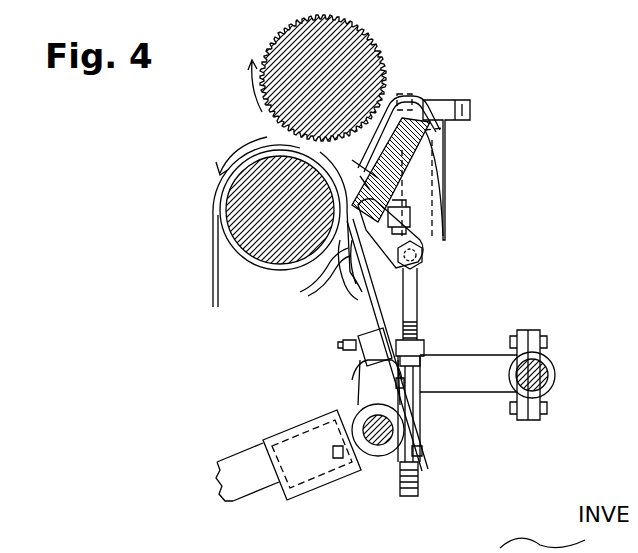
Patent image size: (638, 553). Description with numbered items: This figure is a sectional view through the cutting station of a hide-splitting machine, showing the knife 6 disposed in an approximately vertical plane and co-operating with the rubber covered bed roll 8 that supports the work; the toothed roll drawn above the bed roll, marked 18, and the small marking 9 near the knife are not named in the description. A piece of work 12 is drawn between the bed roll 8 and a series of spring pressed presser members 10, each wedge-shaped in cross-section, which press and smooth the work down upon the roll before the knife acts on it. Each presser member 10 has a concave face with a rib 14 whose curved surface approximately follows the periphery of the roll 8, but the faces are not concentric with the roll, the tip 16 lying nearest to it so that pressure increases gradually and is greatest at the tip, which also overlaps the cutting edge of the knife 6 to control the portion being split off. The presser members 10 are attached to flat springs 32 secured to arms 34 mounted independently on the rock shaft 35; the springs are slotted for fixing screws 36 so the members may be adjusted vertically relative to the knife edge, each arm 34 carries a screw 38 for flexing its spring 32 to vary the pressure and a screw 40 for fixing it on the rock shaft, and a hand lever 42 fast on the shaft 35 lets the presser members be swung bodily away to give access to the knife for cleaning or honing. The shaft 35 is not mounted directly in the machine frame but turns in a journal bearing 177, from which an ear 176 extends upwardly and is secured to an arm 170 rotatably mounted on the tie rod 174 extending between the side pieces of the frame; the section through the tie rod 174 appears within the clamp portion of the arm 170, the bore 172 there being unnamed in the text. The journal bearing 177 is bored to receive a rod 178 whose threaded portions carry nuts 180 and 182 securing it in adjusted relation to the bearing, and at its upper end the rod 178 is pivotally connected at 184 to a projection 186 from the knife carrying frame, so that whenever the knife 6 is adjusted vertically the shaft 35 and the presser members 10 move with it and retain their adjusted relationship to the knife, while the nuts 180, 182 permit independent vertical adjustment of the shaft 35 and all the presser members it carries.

The feed roll gear 18 is at (364, 58).
The bed roll 8 is at (270, 268).
The web 9 is at (360, 160).
The knife 6 is at (357, 173).
The piece of work 12 is at (320, 288).
The rib 14 is at (345, 272).
The presser member 10 is at (358, 288).
The flat spring 32 is at (372, 308).
The tip 16 is at (390, 239).
The projection 186 is at (398, 244).
The pivotal connection 184 is at (425, 256).
The rod 178 is at (418, 296).
The nut 180 is at (425, 344).
The arm 170 is at (473, 367).
The shaft 172 is at (548, 372).
The tie rod 174 is at (546, 382).
The fixing screw 36 is at (406, 384).
The ear 176 is at (365, 392).
The journal bearing 177 is at (421, 420).
The screw 38 is at (340, 345).
The arm 34 is at (370, 350).
The hand lever 42 is at (242, 472).
The screw 40 is at (333, 452).
The rock shaft 35 is at (378, 438).
The nut 182 is at (407, 497).